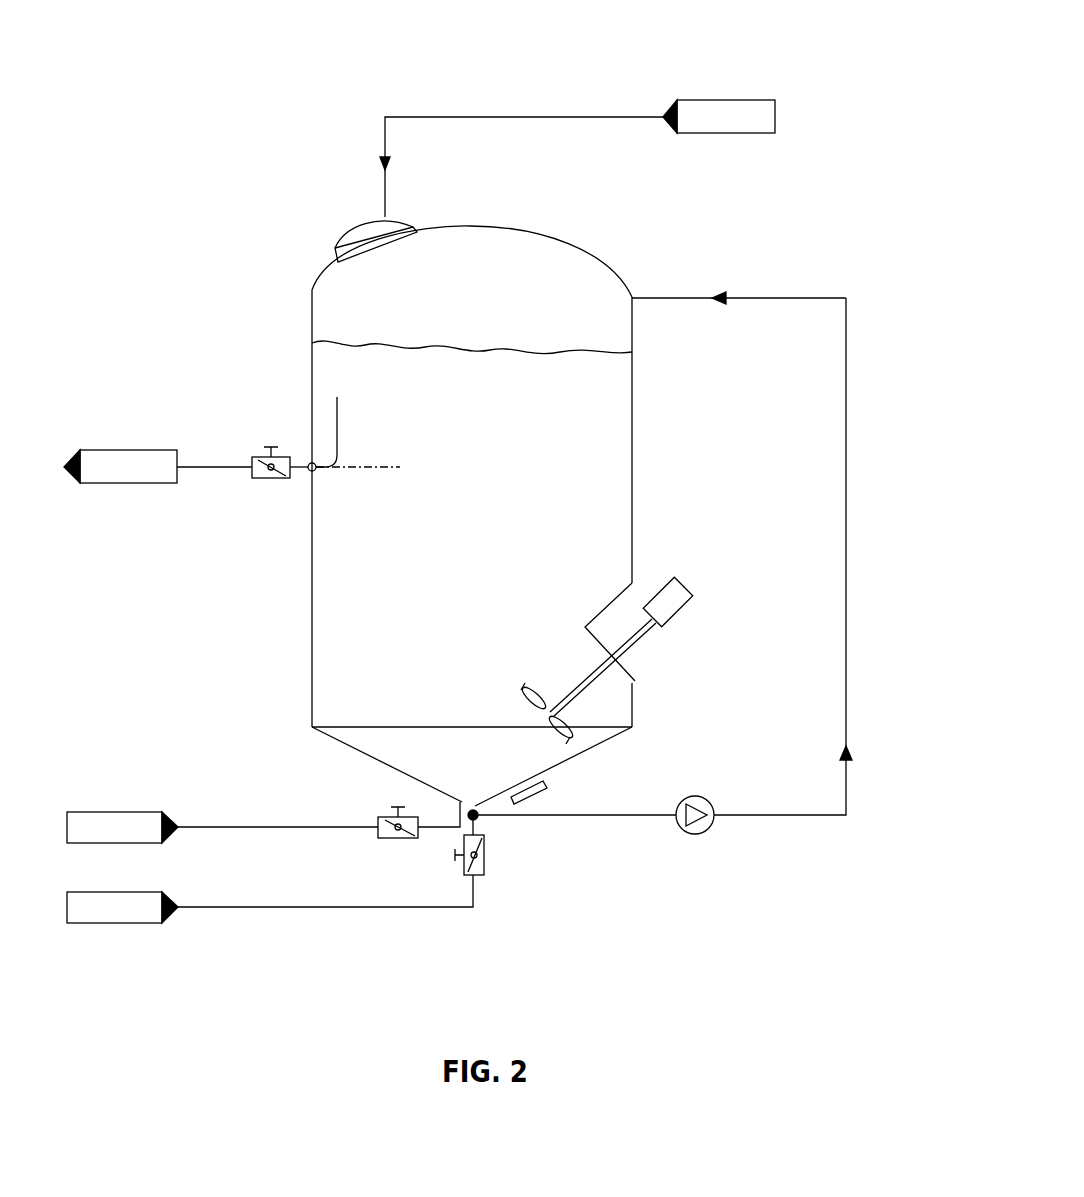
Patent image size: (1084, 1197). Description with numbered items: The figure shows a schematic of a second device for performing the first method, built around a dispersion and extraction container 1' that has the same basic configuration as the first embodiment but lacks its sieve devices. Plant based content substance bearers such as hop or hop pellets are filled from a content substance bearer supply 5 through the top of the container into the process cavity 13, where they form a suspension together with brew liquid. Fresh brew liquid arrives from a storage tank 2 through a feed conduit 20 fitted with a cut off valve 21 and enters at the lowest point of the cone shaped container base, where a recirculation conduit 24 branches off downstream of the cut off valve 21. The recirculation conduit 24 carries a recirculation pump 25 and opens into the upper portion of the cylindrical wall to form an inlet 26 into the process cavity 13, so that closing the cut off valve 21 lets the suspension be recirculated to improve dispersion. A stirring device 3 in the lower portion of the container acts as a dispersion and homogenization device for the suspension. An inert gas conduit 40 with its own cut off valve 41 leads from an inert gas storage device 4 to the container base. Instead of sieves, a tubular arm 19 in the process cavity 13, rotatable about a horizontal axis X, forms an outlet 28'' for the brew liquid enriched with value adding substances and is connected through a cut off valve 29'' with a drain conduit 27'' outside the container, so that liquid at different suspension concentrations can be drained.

The dispersion and extraction container 1' is at (400, 465).
The storage tank 2 is at (105, 449).
The stirring device 3 is at (684, 583).
The inert gas storage device 4 is at (97, 810).
The content substance bearer supply 5 is at (706, 98).
The process cavity 13 is at (486, 502).
The tubular arm 19 is at (328, 406).
The feed conduit 20 is at (327, 909).
The cut off valve 21 is at (487, 860).
The recirculation conduit 24 is at (847, 544).
The recirculation pump 25 is at (709, 829).
The inlet 26 is at (634, 296).
The drain conduit 27'' is at (214, 517).
The outlet 28'' is at (263, 423).
The cut off valve 29'' is at (280, 507).
The inert gas conduit 40 is at (272, 829).
The cut off valve 41 is at (380, 839).
The horizontal axis X is at (385, 470).